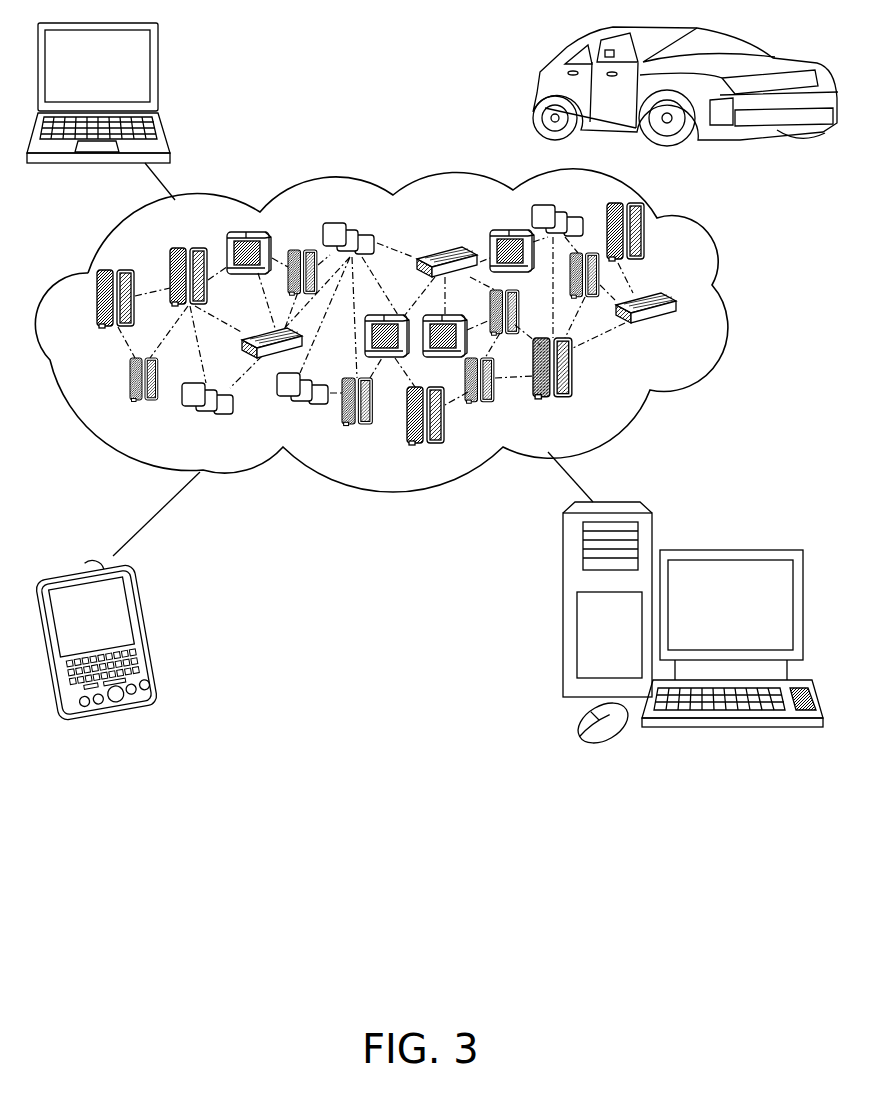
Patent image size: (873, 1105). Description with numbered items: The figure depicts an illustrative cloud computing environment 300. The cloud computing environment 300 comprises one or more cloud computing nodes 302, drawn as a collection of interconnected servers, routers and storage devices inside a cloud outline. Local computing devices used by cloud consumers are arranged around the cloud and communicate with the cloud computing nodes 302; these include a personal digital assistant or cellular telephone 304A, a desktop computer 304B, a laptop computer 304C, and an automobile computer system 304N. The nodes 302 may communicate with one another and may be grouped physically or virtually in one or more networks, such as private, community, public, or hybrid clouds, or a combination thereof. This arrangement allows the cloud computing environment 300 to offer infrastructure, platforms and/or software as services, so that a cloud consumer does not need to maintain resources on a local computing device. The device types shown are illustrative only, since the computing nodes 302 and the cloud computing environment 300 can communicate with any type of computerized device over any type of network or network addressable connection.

The cloud computing environment 300 is at (683, 303).
The cloud computing nodes 302 is at (675, 328).
The personal digital assistant or cellular telephone 304A is at (140, 602).
The desktop computer 304B is at (720, 545).
The laptop computer 304C is at (158, 50).
The automobile computer system 304N is at (540, 90).